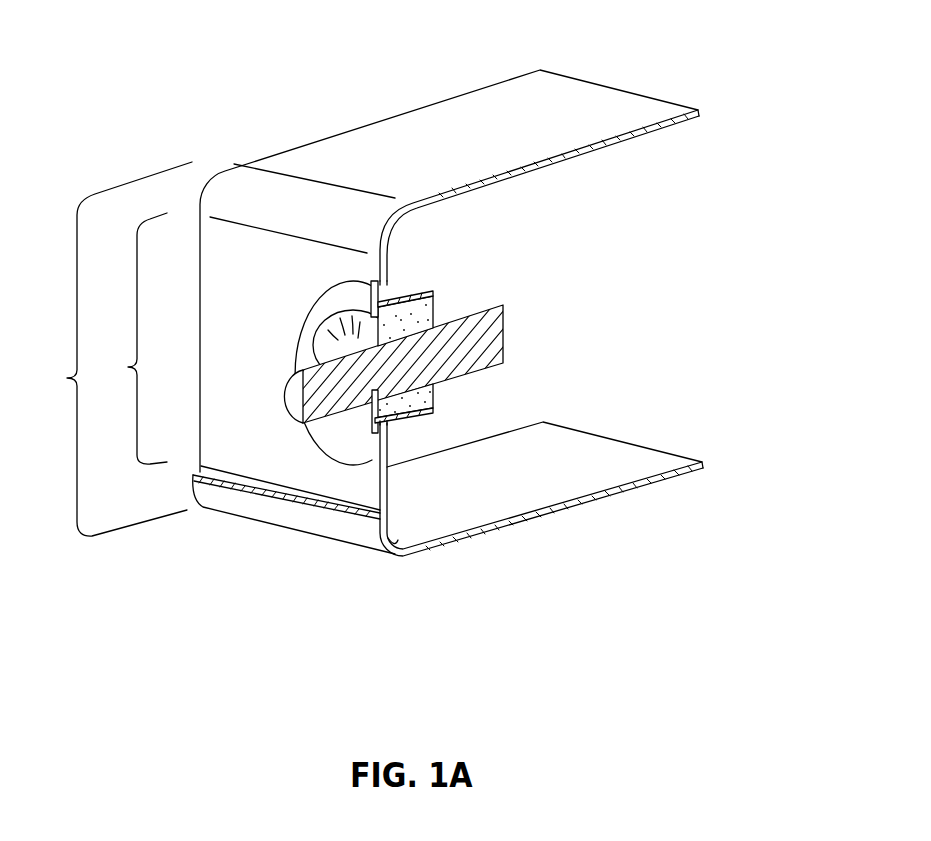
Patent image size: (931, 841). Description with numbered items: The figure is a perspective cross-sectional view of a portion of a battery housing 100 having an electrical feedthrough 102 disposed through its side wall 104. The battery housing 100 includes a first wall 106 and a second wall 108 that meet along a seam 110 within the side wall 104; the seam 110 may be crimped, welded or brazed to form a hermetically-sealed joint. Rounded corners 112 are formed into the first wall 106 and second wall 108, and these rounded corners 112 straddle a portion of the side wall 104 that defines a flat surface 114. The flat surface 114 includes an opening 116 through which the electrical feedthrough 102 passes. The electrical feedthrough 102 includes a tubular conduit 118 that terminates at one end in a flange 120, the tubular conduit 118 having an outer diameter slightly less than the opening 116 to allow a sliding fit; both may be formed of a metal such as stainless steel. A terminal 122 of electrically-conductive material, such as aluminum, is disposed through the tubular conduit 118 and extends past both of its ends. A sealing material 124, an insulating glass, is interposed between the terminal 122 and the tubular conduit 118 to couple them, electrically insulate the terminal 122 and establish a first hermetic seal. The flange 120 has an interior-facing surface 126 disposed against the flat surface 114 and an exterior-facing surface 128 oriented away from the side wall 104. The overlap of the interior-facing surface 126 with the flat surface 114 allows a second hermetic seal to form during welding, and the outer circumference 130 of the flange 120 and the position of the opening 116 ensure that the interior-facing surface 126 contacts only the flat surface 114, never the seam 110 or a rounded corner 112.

The battery housing 100 is at (612, 73).
The electrical feedthrough 102 is at (297, 443).
The side wall 104 is at (110, 349).
The first wall 106 is at (627, 113).
The second wall 108 is at (648, 484).
The seam 110 is at (353, 513).
The rounded corners 112 is at (246, 184).
The flat surface 114 is at (127, 338).
The opening 116 is at (403, 411).
The tubular conduit 118 is at (415, 290).
The flange 120 is at (296, 331).
The terminal 122 is at (505, 325).
The sealing material 124 is at (434, 398).
The interior-facing surface 126 is at (399, 286).
The exterior-facing surface 128 is at (362, 293).
The outer circumference 130 is at (333, 446).